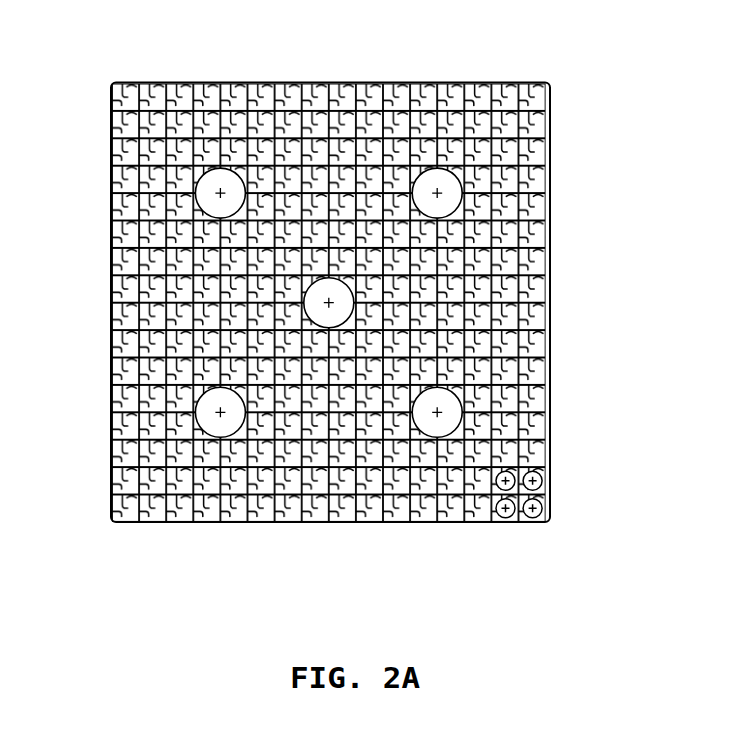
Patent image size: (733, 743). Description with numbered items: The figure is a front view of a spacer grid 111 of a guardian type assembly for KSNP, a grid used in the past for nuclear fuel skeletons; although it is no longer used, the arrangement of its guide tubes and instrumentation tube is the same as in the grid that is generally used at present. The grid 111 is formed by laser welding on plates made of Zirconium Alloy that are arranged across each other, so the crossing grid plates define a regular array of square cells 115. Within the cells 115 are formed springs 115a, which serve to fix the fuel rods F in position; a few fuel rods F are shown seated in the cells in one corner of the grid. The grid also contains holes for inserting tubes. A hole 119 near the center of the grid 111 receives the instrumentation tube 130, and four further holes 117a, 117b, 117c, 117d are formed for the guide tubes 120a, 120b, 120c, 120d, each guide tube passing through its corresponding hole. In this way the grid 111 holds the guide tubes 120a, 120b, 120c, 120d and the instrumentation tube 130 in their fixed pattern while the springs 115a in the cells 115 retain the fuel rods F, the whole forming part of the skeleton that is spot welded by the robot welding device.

The spacer grid 111 is at (600, 64).
The cell 115 is at (343, 95).
The spring 115a is at (208, 99).
The hole for guide tube 117a is at (195, 413).
The hole for guide tube 117b is at (463, 412).
The hole for guide tube 117c is at (196, 194).
The hole for guide tube 117d is at (462, 194).
The hole for instrumentation tube 119 is at (354, 303).
The guide tube 120a is at (201, 394).
The guide tube 120b is at (456, 394).
The guide tube 120c is at (201, 175).
The guide tube 120d is at (457, 175).
The instrumentation tube 130 is at (350, 287).
The fuel rod F is at (548, 480).